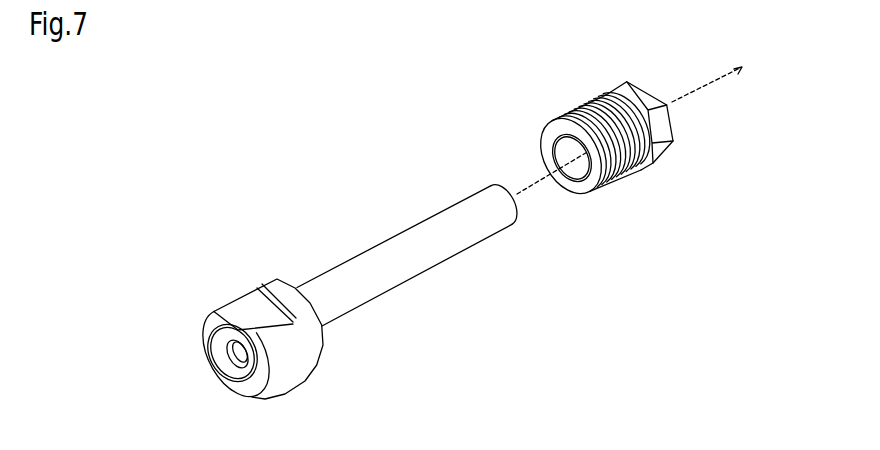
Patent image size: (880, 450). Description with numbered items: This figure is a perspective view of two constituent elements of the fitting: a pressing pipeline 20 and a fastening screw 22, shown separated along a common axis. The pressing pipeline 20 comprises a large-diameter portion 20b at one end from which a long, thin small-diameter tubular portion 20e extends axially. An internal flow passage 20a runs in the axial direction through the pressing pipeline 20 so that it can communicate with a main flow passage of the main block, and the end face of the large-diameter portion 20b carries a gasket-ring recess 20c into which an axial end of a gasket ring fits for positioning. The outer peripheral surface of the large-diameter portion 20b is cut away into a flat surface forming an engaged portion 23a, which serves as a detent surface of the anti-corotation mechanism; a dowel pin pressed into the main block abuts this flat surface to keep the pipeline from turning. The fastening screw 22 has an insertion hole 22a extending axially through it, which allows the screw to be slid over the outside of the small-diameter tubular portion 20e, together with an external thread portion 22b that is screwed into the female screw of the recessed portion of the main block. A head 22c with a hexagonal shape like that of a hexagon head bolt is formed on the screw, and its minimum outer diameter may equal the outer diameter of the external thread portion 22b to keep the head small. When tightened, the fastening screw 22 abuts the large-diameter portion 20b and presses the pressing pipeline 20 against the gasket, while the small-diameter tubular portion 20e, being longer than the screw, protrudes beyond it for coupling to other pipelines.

The pressing pipeline 20 is at (327, 232).
The internal flow passage 20a is at (207, 348).
The large-diameter portion 20b is at (327, 353).
The gasket-ring recess 20c is at (211, 365).
The small-diameter tubular portion 20e is at (444, 262).
The engaged portion 23a is at (243, 307).
The fastening screw 22 is at (623, 190).
The insertion hole 22a is at (558, 151).
The external thread portion 22b is at (643, 169).
The head 22c is at (684, 148).